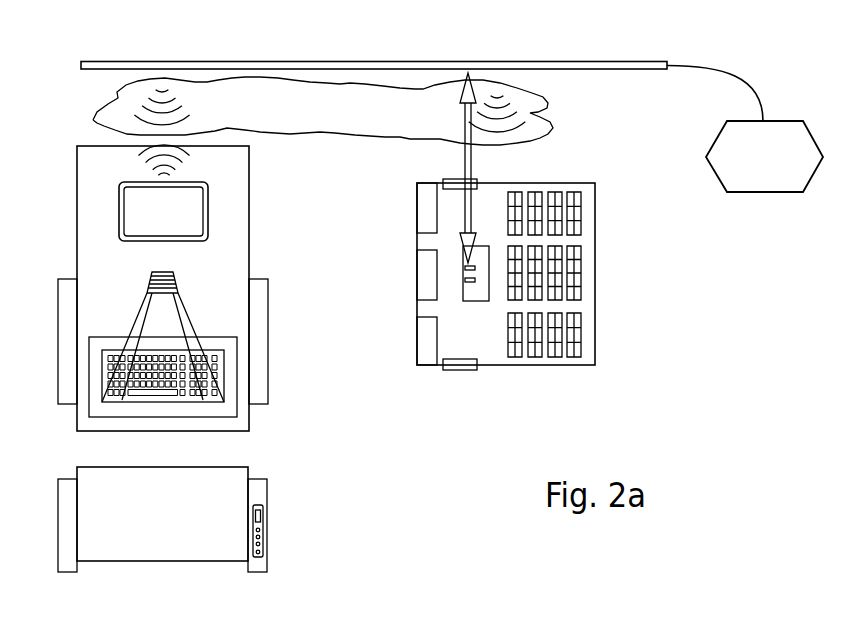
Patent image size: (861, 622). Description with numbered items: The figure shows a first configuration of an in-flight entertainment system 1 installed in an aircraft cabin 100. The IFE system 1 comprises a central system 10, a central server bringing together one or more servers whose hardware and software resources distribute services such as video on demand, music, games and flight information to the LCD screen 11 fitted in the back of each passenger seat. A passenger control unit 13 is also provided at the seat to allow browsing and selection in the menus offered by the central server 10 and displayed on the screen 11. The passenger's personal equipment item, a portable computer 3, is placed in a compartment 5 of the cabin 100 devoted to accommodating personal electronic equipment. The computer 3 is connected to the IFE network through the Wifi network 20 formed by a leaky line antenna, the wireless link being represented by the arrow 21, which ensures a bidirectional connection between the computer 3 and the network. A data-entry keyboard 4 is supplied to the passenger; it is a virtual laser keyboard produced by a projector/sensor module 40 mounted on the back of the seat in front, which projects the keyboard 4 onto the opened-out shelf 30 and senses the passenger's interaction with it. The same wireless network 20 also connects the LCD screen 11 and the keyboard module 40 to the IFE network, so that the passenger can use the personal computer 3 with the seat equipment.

The in-flight entertainment system 1 is at (605, 61).
The central system 10 is at (795, 120).
The Wifi network 20 is at (345, 131).
The wireless link 21 is at (471, 162).
The aircraft cabin 100 is at (543, 274).
The compartment 5 is at (481, 246).
The personal equipment item 3 is at (468, 285).
The shelf 30 is at (154, 304).
The LCD screen 11 is at (197, 215).
The projector/sensor module 40 is at (178, 280).
The data-entry keyboard 4 is at (167, 385).
The passenger control unit 13 is at (258, 489).